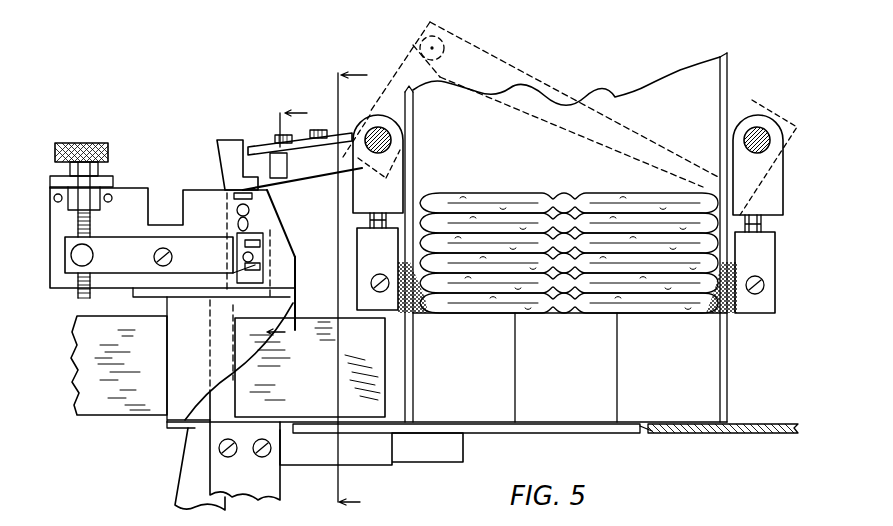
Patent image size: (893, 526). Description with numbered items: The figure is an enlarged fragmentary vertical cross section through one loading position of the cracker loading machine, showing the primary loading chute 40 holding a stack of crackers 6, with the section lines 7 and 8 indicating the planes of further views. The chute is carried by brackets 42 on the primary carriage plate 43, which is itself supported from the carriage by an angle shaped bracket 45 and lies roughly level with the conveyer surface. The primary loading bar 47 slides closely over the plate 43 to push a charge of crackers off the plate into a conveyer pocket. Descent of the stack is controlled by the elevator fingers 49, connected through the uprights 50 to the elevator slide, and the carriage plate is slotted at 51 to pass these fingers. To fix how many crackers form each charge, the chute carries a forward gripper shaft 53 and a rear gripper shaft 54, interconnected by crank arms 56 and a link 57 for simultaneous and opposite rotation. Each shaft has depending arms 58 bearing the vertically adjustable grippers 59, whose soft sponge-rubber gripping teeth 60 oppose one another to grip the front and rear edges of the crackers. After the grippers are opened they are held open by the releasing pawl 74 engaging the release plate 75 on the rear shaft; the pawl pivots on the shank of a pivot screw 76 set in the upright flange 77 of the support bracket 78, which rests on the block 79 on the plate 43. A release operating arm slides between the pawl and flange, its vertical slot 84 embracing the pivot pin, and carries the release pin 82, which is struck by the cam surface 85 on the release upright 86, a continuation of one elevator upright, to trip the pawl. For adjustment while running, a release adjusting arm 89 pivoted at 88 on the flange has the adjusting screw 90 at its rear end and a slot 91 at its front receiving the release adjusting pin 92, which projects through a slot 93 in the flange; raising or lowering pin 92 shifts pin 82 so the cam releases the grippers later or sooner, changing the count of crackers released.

The crackers 6 is at (478, 193).
The section line 7- 7 is at (295, 220).
The section line 8- 8 is at (360, 293).
The primary loading chute 40 is at (650, 98).
The brackets 42 is at (373, 474).
The primary carriage plate 43 is at (773, 433).
The angle shaped brackets 45 is at (186, 490).
The primary loading bar 47 is at (377, 374).
The elevator fingers 49 is at (620, 428).
The uprights 50 is at (261, 487).
The slots 51 is at (653, 430).
The forward gripper shaft 53 is at (745, 140).
The rear gripper shaft 54 is at (392, 139).
The crank arms 56 is at (447, 32).
The link 57 is at (492, 70).
The depending arms 58 is at (362, 198).
The grippers 59 is at (362, 242).
The gripping teeth 60 is at (420, 313).
The releasing pawl 74 is at (223, 140).
The release plate 75 is at (258, 147).
The pivot screw 76 is at (266, 206).
The upright flange 77 is at (127, 197).
The support bracket 78 is at (143, 290).
The block 79 is at (183, 367).
The release pin 82 is at (290, 296).
The vertical slot 84 is at (250, 192).
The cam surface 85 is at (240, 318).
The release upright 86 is at (220, 393).
The pivot 88 is at (172, 248).
The release adjusting arm 89 is at (108, 252).
The adjusting screw 90 is at (84, 142).
The slot 91 is at (232, 270).
The release adjusting pin 92 is at (253, 263).
The slot 93 is at (263, 254).